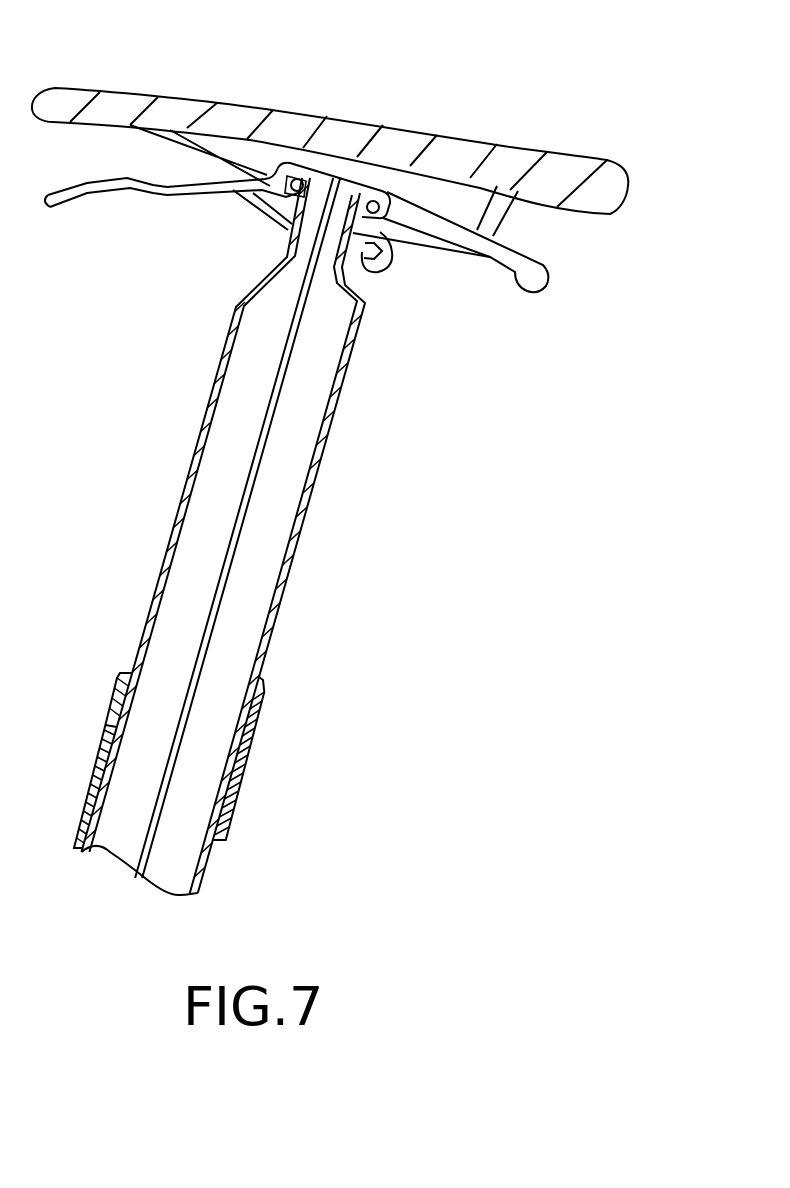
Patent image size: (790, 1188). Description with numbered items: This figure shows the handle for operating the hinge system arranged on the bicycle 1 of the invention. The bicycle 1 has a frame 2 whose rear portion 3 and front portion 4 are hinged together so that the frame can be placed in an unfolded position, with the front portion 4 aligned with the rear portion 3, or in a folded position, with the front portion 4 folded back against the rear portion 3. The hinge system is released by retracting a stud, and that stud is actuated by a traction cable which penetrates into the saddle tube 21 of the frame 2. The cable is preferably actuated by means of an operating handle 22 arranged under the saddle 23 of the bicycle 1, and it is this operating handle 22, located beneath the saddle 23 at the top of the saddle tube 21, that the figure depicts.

The bicycle 1 is at (632, 108).
The frame 2 is at (305, 517).
The saddle tube 21 is at (217, 747).
The rear portion 3 is at (108, 690).
The front portion 4 is at (432, 125).
The saddle 23 is at (508, 148).
The operating handle 22 is at (537, 280).